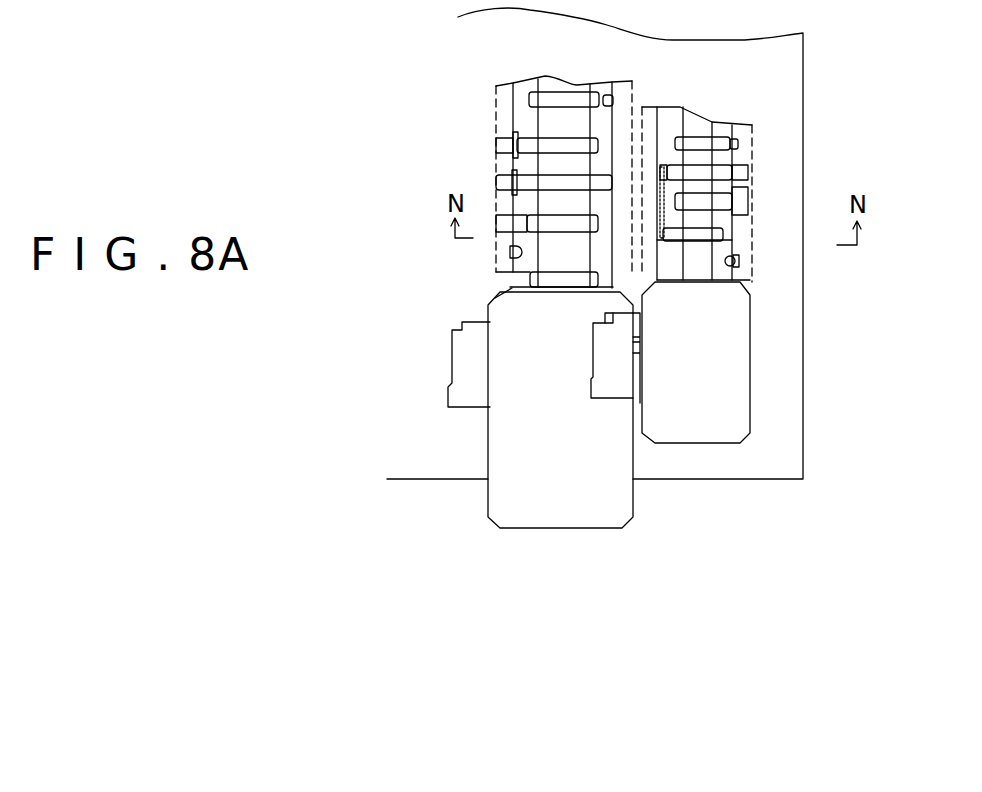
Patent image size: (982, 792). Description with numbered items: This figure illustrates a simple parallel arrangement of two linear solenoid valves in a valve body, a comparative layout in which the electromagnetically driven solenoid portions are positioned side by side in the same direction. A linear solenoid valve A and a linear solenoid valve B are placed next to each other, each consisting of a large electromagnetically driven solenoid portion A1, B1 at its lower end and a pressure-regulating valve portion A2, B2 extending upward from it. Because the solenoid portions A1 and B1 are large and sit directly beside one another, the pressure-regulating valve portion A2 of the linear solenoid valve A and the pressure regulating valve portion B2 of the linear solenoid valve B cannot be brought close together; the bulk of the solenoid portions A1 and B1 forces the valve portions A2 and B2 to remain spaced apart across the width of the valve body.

The linear solenoid valve A is at (488, 277).
The electromagnetically driven solenoid portion A1 is at (508, 442).
The pressure-regulating valve portion A2 is at (497, 164).
The linear solenoid valve B is at (764, 282).
The electromagnetically driven solenoid portion B1 is at (730, 358).
The pressure regulating valve portion B2 is at (750, 136).